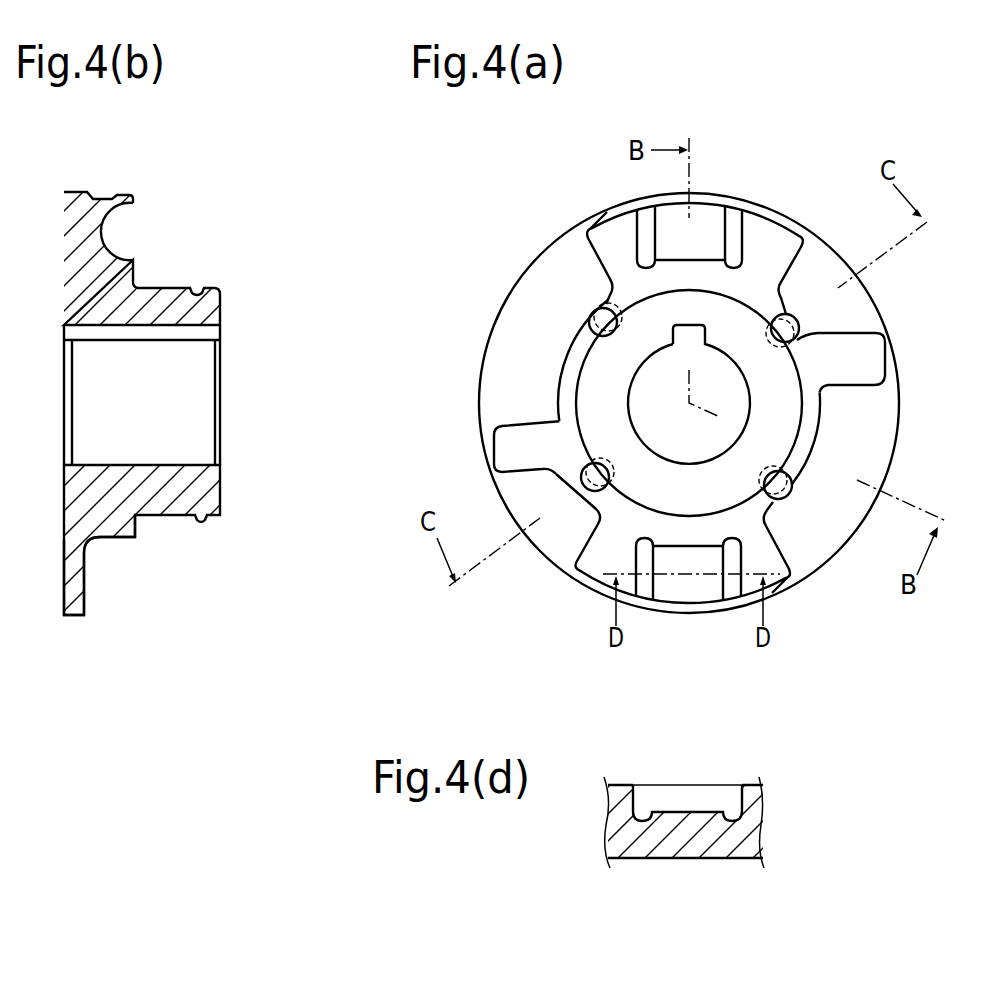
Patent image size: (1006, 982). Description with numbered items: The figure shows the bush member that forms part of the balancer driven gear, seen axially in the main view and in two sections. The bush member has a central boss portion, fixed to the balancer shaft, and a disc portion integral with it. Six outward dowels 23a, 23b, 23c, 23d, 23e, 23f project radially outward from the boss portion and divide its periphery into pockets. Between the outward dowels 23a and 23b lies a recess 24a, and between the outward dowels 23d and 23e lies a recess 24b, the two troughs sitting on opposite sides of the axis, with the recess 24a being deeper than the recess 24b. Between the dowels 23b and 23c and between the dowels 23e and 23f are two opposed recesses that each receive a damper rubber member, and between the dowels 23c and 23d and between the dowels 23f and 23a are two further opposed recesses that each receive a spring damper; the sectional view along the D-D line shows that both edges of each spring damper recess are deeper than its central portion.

The outward dowel 23a is at (772, 250).
The outward dowel 23b is at (866, 360).
The outward dowel 23c is at (797, 560).
The outward dowel 23d is at (588, 564).
The outward dowel 23e is at (511, 459).
The outward dowel 23f is at (613, 238).
The recess 24a is at (828, 323).
The recess 24b is at (563, 531).